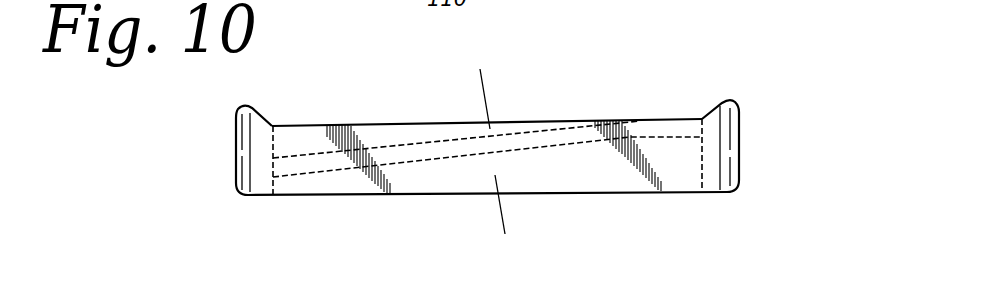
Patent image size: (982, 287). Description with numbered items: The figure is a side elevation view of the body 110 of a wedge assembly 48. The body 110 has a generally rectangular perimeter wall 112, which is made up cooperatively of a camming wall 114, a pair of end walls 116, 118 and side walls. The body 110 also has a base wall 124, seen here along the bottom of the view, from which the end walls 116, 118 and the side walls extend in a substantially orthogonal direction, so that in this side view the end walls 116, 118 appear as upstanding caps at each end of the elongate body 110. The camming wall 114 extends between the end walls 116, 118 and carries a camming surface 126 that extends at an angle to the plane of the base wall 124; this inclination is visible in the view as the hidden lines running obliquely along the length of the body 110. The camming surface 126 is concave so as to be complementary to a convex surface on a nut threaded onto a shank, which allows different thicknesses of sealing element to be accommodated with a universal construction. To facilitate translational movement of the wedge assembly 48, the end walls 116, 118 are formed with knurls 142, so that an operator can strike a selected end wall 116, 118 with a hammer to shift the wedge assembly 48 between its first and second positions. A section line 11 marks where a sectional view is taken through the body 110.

The section line 11 is at (492, 77).
The wedge assembly 48 is at (739, 112).
The body 110 is at (353, 180).
The perimeter wall 112 is at (550, 170).
The camming wall 114 is at (318, 167).
The end wall 116 is at (237, 165).
The end wall 118 is at (738, 146).
The base wall 124 is at (608, 192).
The camming surface 126 is at (413, 146).
The knurls 142 is at (235, 147).